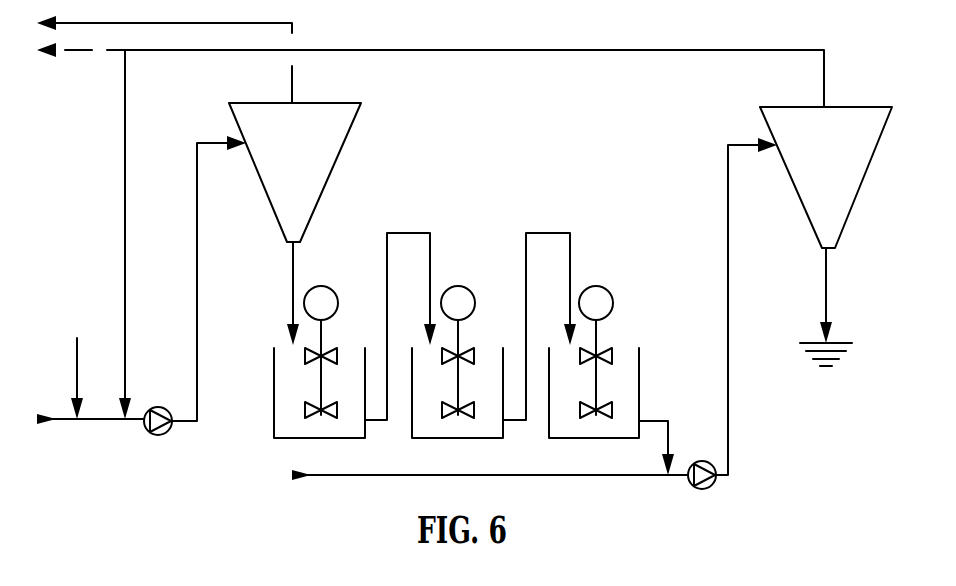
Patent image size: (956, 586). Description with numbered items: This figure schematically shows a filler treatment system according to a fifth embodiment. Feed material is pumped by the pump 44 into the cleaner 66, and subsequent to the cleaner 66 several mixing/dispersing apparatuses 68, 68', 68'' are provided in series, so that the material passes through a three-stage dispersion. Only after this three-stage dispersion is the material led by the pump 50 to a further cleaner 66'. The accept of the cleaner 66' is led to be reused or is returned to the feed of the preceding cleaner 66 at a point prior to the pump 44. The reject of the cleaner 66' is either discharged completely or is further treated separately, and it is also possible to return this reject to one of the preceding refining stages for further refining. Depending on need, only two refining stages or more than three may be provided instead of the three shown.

The pump 44 is at (173, 427).
The pump 50 is at (716, 481).
The cleaner 66 is at (334, 205).
The cleaner 66' is at (791, 223).
The mixing/dispersing apparatus 68 is at (293, 362).
The mixing/dispersing apparatus 68' is at (457, 342).
The mixing/dispersing apparatus 68'' is at (608, 342).